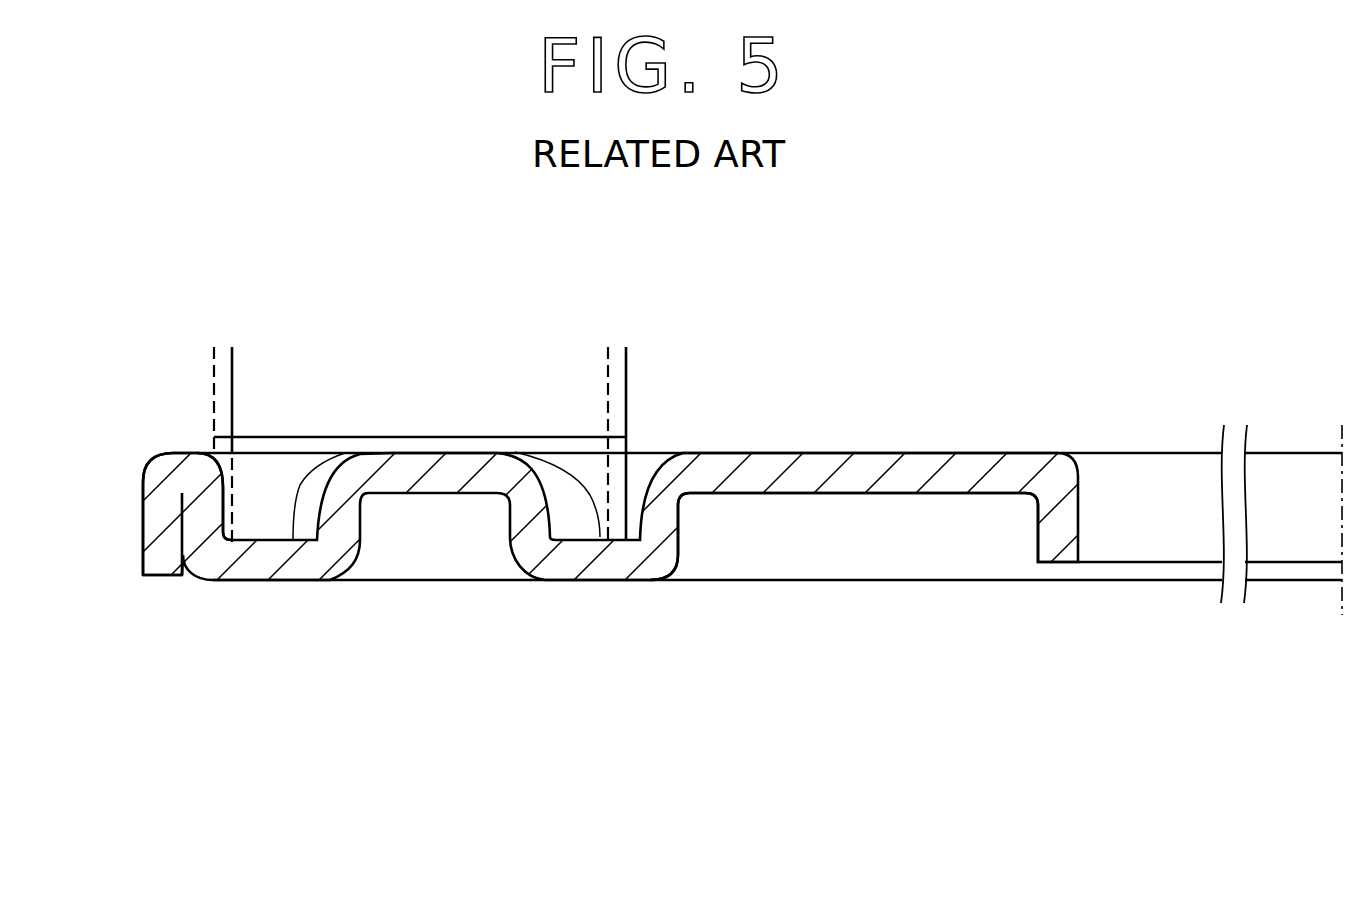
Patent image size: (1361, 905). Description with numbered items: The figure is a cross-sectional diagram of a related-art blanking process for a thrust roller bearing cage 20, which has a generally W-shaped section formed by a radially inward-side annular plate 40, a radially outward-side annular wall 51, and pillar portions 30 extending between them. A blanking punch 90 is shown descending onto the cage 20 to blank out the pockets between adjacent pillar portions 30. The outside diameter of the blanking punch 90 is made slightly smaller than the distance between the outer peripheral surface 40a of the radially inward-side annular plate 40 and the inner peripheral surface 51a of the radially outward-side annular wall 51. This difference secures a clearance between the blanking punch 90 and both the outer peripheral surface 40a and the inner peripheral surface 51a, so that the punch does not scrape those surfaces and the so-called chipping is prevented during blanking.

The cage 20 is at (757, 430).
The pillar portions 30 is at (515, 452).
The radially inward-side annular plate 40 is at (950, 495).
The outer peripheral surface 40a is at (637, 516).
The radially outward-side annular wall 51 is at (197, 492).
The inner peripheral surface 51a is at (232, 514).
The blanking punch 90 is at (245, 394).